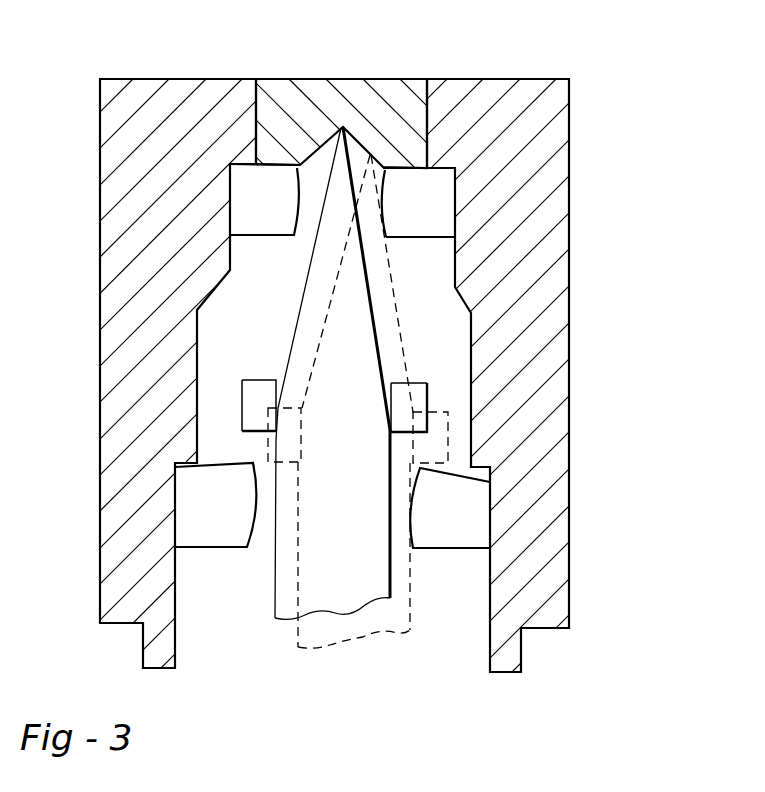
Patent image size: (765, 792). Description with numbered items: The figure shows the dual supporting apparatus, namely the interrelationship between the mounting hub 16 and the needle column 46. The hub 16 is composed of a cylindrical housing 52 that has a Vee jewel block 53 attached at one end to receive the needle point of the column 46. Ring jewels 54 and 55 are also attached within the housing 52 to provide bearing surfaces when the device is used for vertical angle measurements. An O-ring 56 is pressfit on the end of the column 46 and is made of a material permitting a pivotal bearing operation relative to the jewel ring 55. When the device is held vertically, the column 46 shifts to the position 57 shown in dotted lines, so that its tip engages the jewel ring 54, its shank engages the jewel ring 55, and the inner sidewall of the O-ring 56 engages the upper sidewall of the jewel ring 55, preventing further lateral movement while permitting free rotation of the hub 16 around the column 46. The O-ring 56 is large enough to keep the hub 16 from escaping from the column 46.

The mounting hub 16 is at (170, 100).
The Vee jewel block 53 is at (333, 95).
The cylindrical housing 52 is at (552, 318).
The ring jewel 54 is at (265, 220).
The ring jewel 55 is at (223, 546).
The O-ring 56 is at (258, 390).
The needle column 46 is at (285, 600).
The shifted position of column 57 is at (409, 602).